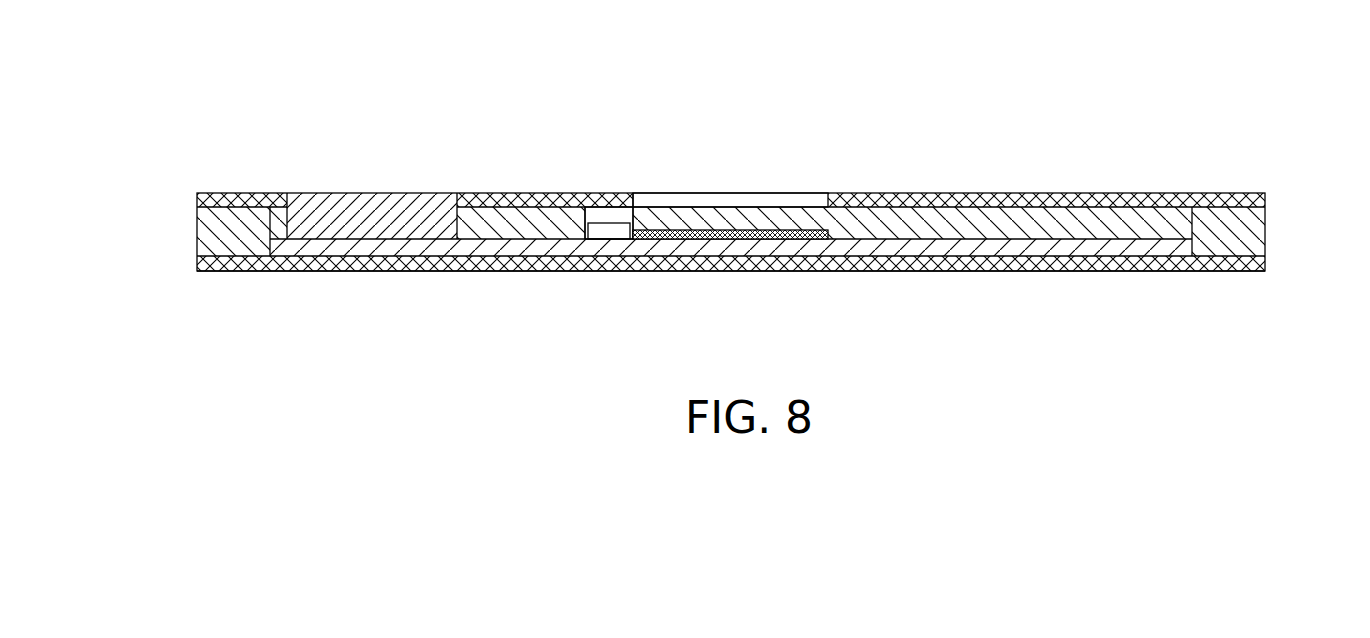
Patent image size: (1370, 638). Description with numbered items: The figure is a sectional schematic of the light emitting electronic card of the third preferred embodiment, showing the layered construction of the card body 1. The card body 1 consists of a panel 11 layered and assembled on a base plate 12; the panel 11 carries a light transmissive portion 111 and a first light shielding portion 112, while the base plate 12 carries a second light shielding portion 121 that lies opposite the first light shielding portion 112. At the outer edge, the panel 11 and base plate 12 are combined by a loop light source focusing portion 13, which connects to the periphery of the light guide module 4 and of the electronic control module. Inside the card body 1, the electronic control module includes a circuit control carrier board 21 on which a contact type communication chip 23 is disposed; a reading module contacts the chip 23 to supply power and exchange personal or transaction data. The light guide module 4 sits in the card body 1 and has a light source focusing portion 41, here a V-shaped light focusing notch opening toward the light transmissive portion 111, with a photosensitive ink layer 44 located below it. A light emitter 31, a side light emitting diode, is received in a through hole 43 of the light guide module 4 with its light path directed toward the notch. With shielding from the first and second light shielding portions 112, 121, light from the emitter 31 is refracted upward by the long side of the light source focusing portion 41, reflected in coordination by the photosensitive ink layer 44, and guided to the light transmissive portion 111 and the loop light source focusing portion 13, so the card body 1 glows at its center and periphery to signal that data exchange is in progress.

The card body 1 is at (226, 180).
The panel 11 is at (1266, 200).
The light transmissive portion 111 is at (685, 200).
The first light shielding portion 112 is at (965, 195).
The base plate 12 is at (197, 261).
The second light shielding portion 121 is at (1113, 271).
The loop light source focusing portion 13 is at (1248, 243).
The circuit control carrier board 21 is at (520, 247).
The contact type communication chip 23 is at (383, 205).
The light emitter 31 is at (601, 223).
The light guide module 4 is at (1105, 218).
The light source focusing portion 41 is at (730, 218).
The through hole 43 is at (626, 215).
The photosensitive ink layer 44 is at (792, 233).